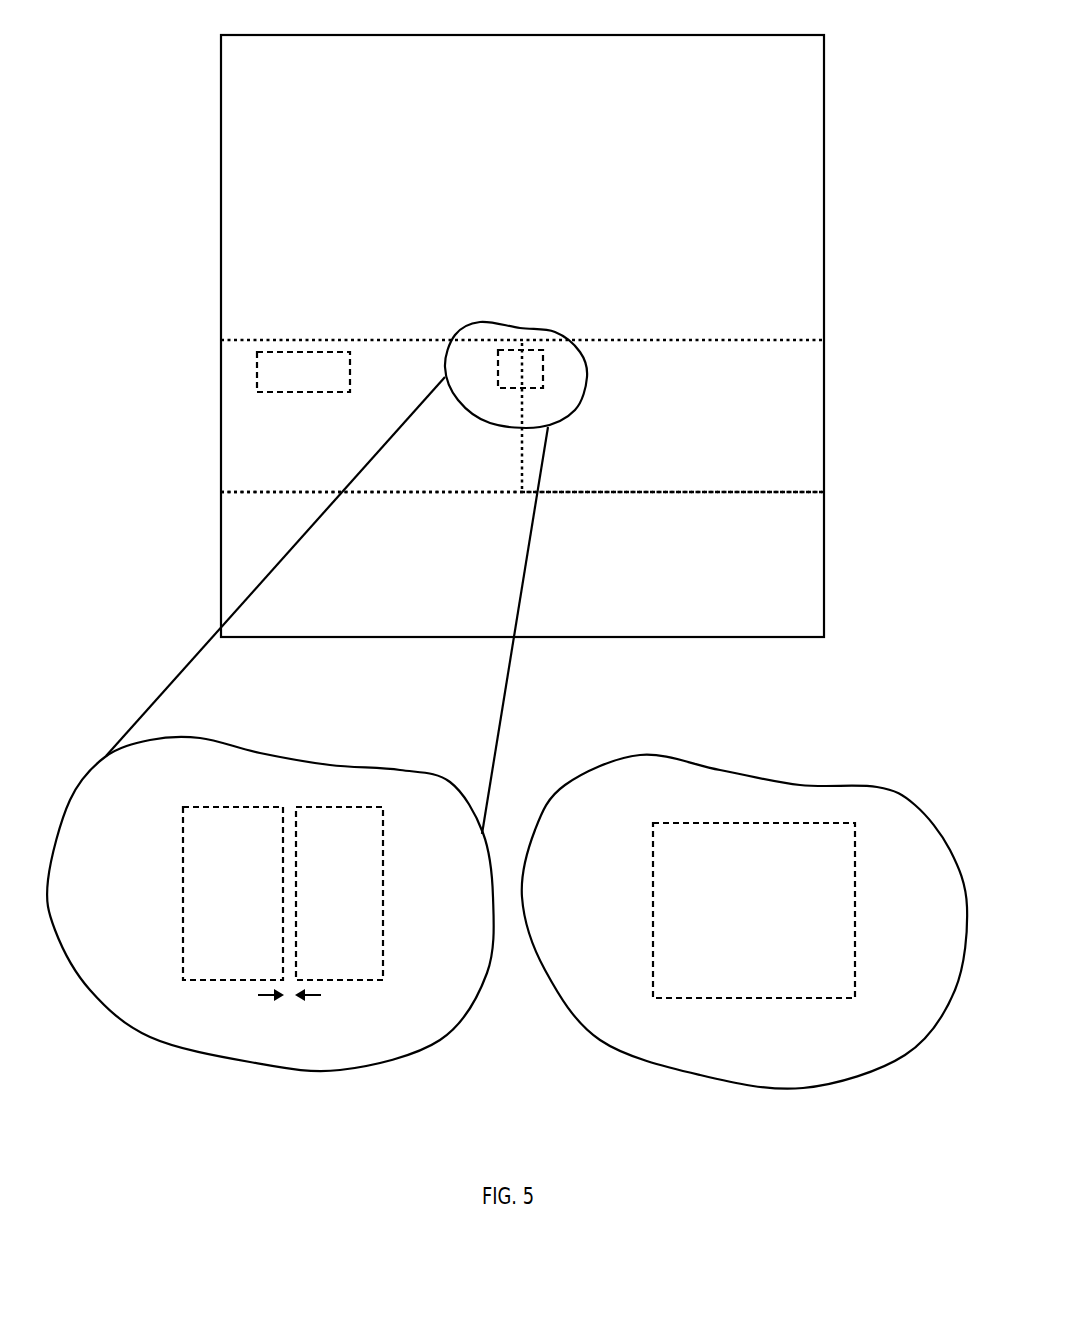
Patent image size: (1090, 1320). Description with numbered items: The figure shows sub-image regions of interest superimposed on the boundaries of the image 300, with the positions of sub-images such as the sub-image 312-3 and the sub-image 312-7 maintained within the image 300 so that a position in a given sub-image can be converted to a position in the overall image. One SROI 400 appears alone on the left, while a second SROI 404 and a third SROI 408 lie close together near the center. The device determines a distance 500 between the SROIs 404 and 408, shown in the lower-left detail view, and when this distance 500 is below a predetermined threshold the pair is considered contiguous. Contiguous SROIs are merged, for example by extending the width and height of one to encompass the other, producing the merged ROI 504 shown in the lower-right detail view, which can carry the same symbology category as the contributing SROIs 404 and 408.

The image 300 is at (208, 275).
The SROI 400 is at (302, 392).
The SROI 404 is at (498, 388).
The SROI 408 is at (543, 388).
The sub-image 312-3 is at (375, 492).
The sub-image 312-7 is at (668, 492).
The distance 500 is at (289, 1008).
The ROI 504 is at (772, 924).